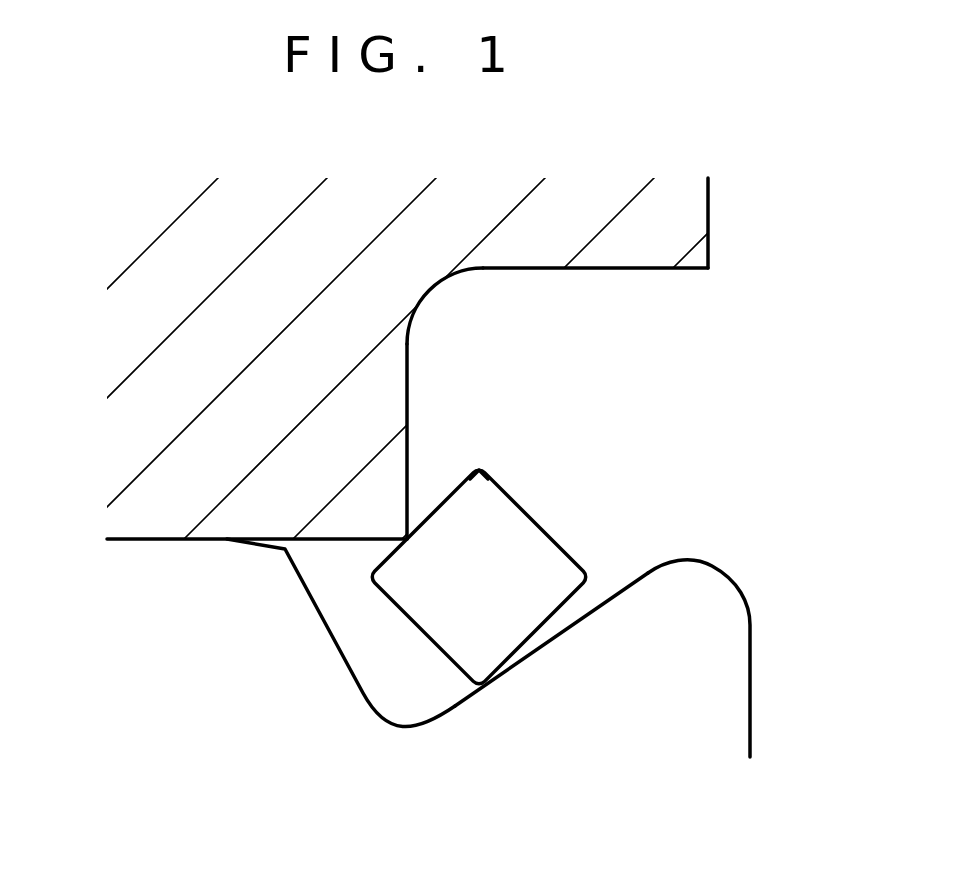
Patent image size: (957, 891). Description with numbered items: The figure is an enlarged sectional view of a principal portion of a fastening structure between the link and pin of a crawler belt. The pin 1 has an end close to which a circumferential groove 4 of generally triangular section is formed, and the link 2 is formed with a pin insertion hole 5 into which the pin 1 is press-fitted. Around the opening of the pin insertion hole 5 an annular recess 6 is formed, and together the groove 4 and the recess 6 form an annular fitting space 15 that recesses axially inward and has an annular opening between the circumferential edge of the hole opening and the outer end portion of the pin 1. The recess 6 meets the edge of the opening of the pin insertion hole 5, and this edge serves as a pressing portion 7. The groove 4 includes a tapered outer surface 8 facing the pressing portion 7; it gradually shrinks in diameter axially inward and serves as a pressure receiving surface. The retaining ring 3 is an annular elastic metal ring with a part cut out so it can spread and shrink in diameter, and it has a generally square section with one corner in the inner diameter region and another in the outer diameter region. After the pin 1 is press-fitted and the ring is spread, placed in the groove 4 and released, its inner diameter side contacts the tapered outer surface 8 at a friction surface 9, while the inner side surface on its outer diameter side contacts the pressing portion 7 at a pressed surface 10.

The pin 1 is at (143, 727).
The link 2 is at (140, 228).
The retaining ring 3 is at (517, 528).
The circumferential groove 4 is at (348, 665).
The pin insertion hole 5 is at (157, 539).
The annular recess 6 is at (625, 268).
The pressing portion 7 is at (408, 540).
The tapered outer surface 8 is at (605, 600).
The friction surface 9 is at (547, 622).
The pressed surface 10 is at (453, 478).
The annular fitting space 15 is at (687, 428).